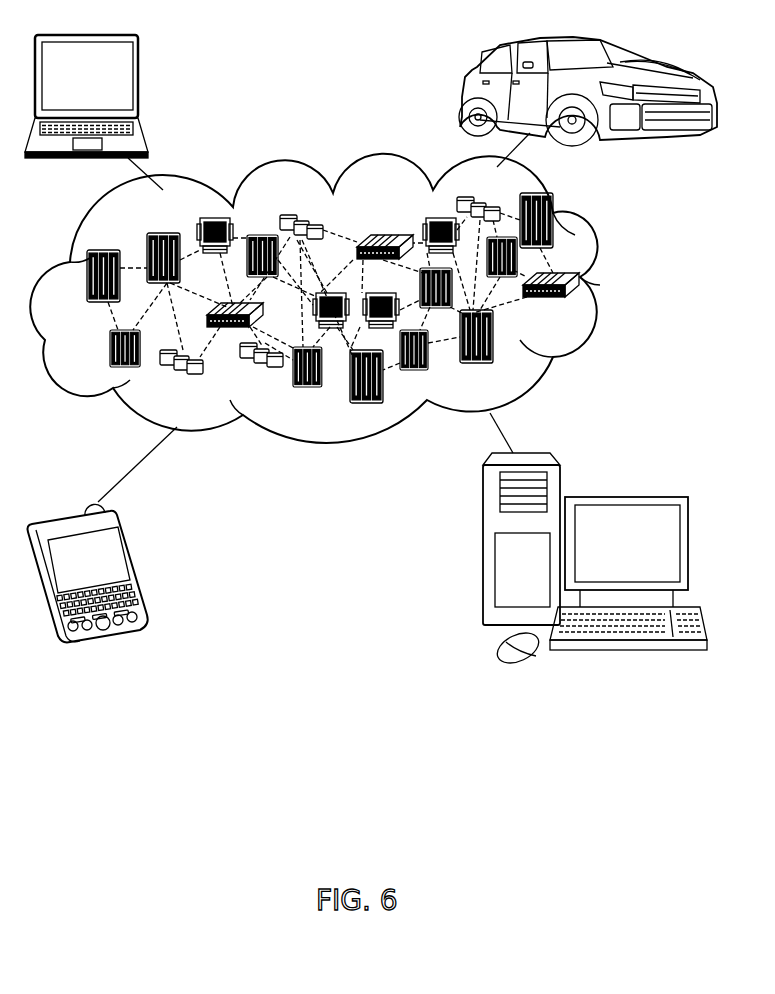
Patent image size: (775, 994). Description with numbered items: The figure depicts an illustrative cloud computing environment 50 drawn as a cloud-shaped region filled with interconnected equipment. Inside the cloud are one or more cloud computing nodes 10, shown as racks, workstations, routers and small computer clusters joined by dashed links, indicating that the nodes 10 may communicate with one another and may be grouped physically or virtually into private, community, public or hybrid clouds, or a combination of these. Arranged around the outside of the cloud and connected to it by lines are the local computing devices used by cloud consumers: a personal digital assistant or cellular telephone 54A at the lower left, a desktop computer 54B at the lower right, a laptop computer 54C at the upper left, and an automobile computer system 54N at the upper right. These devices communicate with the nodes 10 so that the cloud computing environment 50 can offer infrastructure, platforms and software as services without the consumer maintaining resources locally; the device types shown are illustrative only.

The cloud computing node 10 is at (584, 306).
The cloud computing environment 50 is at (627, 281).
The personal digital assistant or cellular telephone 54A is at (133, 566).
The desktop computer 54B is at (625, 497).
The laptop computer 54C is at (138, 82).
The automobile computer system 54N is at (462, 92).